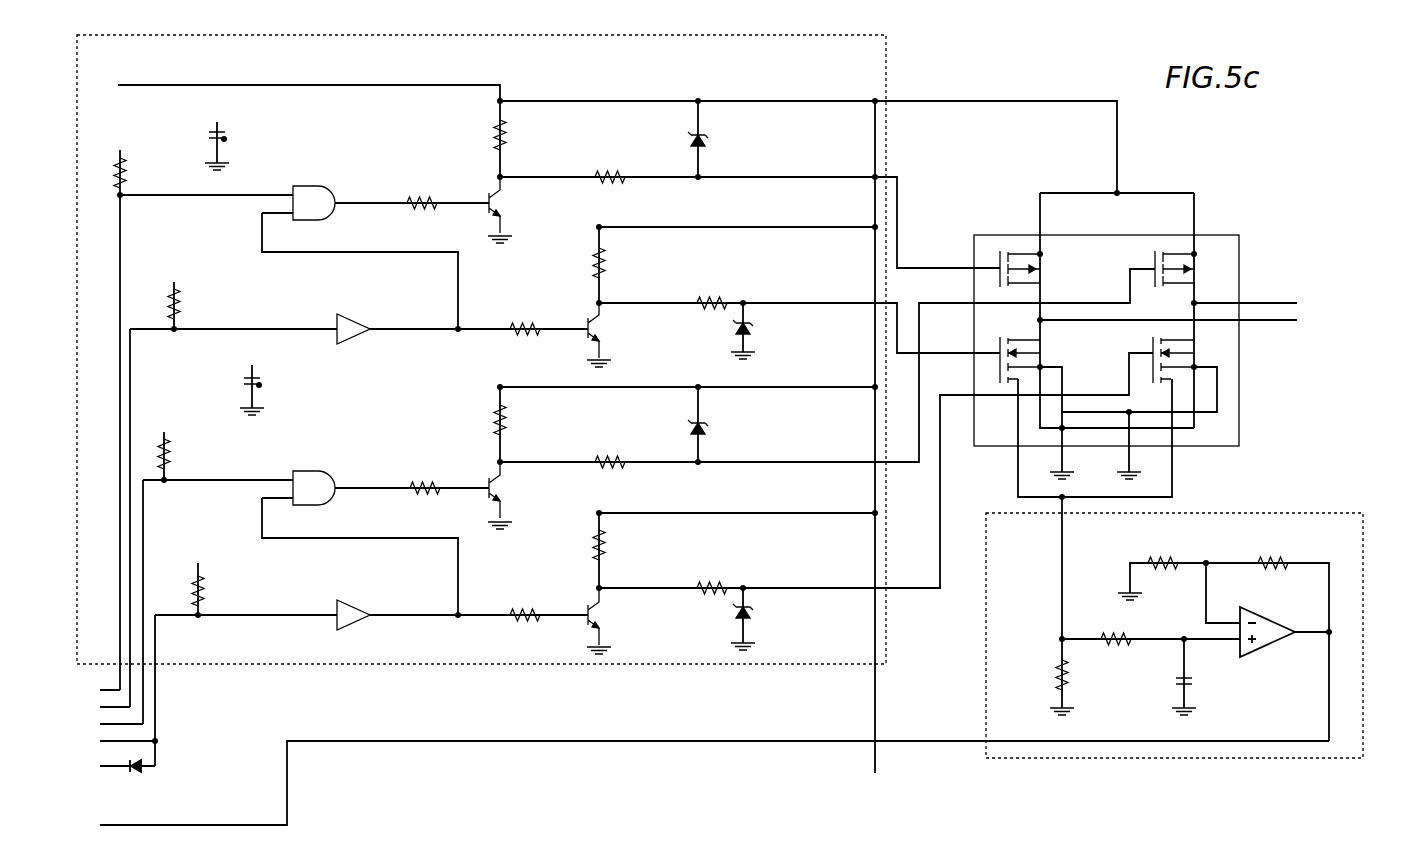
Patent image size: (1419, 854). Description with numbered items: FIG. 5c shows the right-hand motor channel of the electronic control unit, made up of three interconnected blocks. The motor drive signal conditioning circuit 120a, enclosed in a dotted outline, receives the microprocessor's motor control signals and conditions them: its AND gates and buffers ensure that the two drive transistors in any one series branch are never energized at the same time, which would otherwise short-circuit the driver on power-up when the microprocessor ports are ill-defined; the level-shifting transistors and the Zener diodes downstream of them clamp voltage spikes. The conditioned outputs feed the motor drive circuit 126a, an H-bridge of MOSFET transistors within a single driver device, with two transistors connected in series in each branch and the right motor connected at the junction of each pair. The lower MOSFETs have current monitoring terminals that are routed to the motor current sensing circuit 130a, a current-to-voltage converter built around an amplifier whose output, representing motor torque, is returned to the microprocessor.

The motor drive signal conditioning circuit 120a is at (305, 50).
The motor drive circuit 126a is at (1165, 185).
The motor current sensing circuit 130a is at (1215, 525).